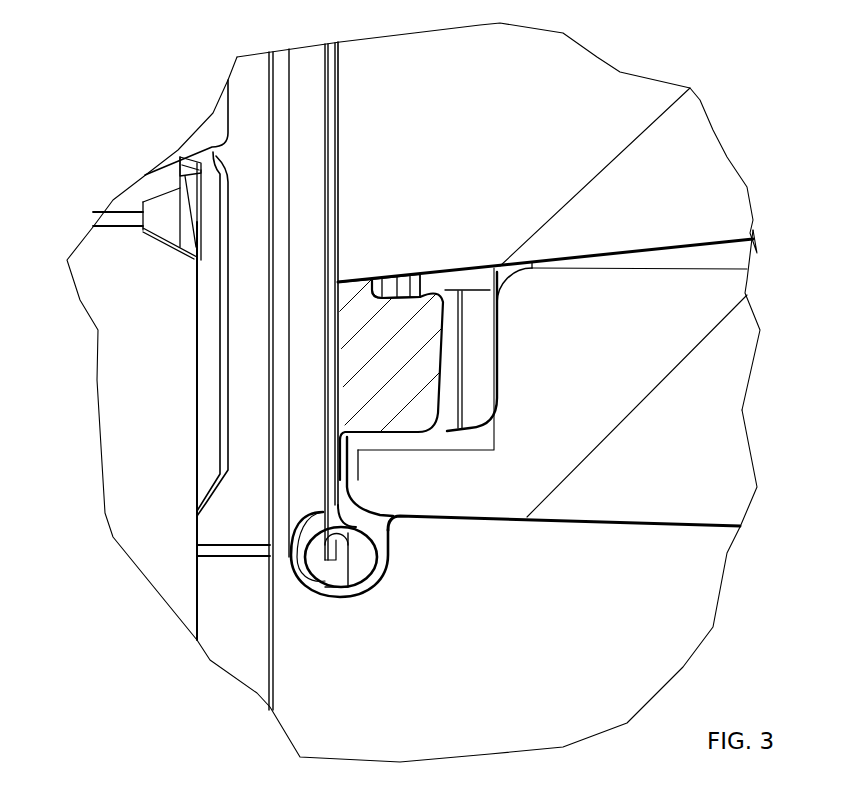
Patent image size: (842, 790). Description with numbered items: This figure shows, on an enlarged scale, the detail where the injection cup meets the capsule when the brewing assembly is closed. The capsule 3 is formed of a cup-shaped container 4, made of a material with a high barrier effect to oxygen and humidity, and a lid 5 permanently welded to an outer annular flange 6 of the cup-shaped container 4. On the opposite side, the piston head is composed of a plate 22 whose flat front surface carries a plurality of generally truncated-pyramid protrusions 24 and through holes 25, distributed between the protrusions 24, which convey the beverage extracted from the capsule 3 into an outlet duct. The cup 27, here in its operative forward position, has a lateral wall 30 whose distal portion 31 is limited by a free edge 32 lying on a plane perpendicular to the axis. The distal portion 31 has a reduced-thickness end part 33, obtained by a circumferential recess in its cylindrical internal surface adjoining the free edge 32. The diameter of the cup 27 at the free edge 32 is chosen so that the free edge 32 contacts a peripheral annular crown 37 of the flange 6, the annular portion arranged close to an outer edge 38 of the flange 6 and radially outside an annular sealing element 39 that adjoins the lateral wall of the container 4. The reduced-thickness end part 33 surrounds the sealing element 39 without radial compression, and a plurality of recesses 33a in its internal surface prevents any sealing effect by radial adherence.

The capsule 3 is at (597, 115).
The cup-shaped container 4 is at (727, 245).
The lid 5 is at (337, 182).
The outer annular flange 6 is at (327, 341).
The plate 22 is at (125, 527).
The protrusions 24 is at (215, 115).
The through holes 25 is at (120, 217).
The cup 27 is at (760, 508).
The lateral wall 30 is at (721, 534).
The distal portion 31 is at (670, 530).
The free edge 32 is at (357, 473).
The reduced-thickness end part 33 is at (463, 480).
The recesses 33a is at (467, 277).
The peripheral annular crown 37 is at (343, 487).
The outer edge 38 is at (333, 598).
The annular sealing element 39 is at (402, 317).